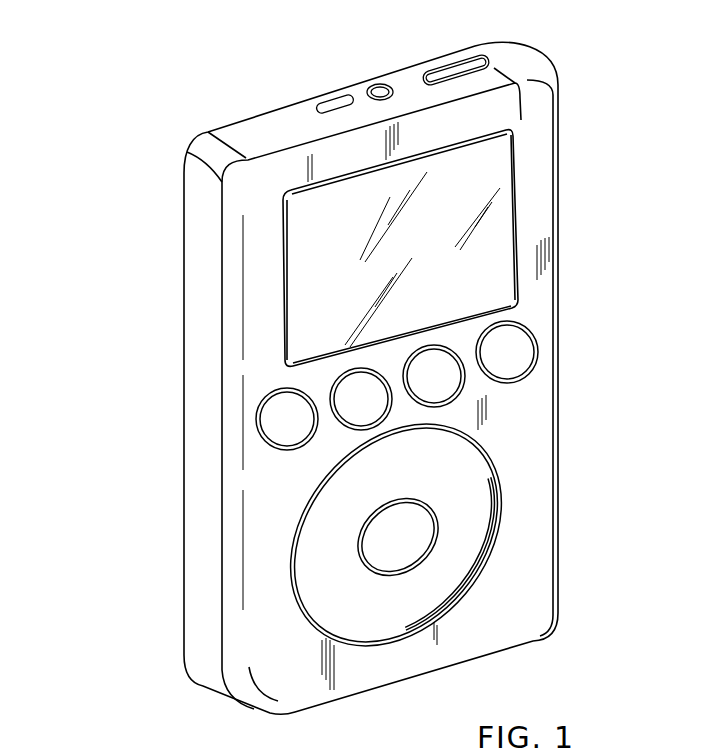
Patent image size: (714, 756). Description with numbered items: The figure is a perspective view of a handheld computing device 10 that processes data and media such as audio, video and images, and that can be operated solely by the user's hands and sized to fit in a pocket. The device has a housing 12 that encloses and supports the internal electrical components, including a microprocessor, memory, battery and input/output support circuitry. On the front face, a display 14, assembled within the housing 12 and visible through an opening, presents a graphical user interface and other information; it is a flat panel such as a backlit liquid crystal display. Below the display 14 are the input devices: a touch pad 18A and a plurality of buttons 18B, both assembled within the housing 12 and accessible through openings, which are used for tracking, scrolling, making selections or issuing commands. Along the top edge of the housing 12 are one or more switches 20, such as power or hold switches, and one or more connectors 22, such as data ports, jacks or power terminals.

The handheld computing device 10 is at (142, 120).
The housing 12 is at (197, 357).
The display 14 is at (490, 260).
The touch pad 18A is at (478, 530).
The buttons 18B is at (508, 358).
The switches 20 is at (442, 66).
The connectors 22 is at (373, 87).